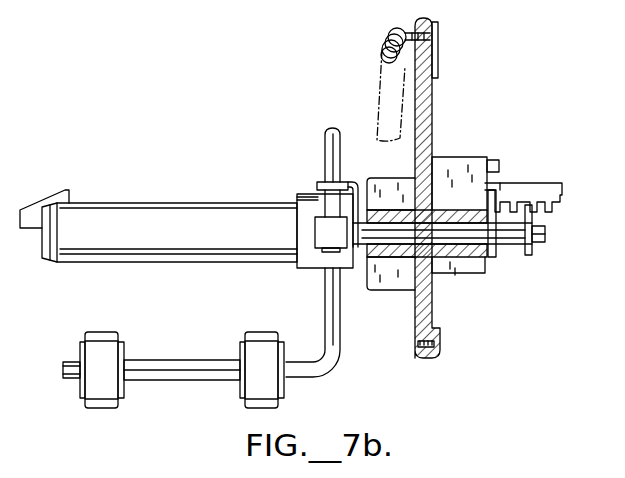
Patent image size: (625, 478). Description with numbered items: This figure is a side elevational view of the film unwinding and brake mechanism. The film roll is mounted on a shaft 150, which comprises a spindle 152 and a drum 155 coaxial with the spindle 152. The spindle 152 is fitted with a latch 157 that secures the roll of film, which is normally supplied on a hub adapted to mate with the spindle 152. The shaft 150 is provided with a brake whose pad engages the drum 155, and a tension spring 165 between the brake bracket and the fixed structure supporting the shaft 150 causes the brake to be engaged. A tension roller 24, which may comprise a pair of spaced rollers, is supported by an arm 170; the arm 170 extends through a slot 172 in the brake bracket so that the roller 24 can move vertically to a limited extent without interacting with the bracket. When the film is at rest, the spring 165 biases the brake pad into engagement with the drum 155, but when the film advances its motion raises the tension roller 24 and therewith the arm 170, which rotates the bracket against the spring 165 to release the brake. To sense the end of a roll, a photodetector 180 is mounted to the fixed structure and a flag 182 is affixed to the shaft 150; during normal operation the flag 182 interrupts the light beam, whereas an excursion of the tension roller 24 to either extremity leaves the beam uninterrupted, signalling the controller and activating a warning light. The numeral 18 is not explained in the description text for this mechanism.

The tension roller 24 is at (290, 407).
The shaft 150 is at (292, 196).
The spindle 152 is at (113, 218).
The drum 155 is at (307, 197).
The latch 157 is at (53, 193).
The tension spring 165 is at (383, 40).
The arm 170 is at (338, 337).
The slot 172 is at (335, 185).
The photodetector 180 is at (540, 208).
The flag 182 is at (533, 218).
The shaft 18 is at (489, 220).